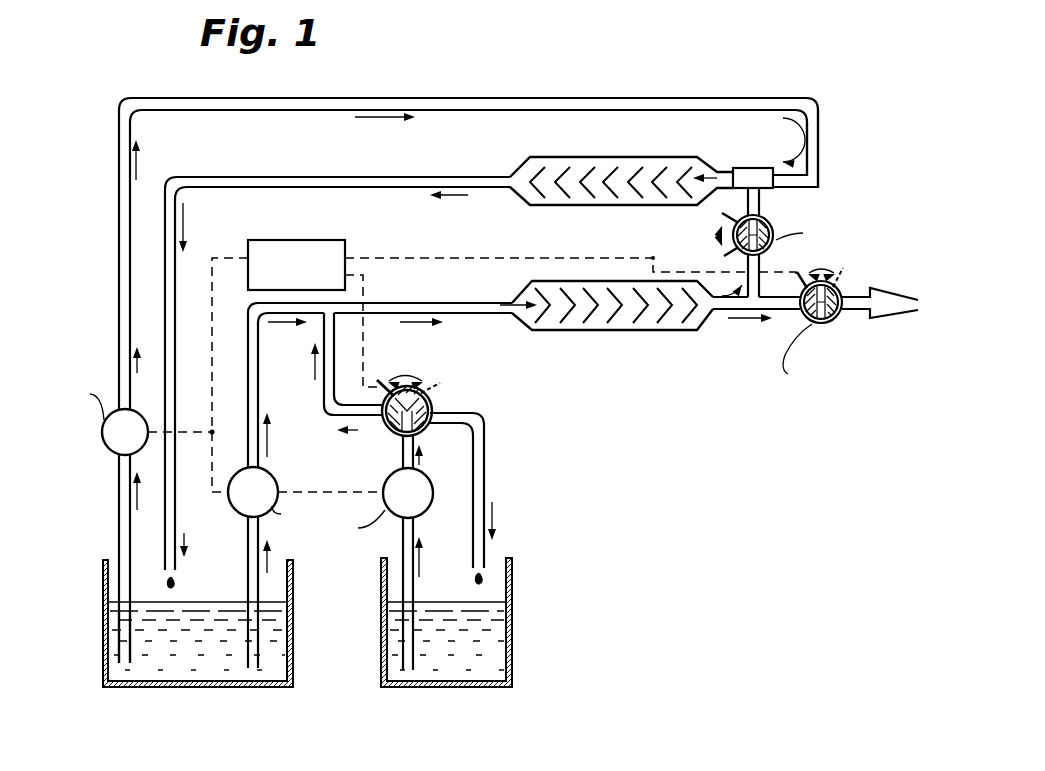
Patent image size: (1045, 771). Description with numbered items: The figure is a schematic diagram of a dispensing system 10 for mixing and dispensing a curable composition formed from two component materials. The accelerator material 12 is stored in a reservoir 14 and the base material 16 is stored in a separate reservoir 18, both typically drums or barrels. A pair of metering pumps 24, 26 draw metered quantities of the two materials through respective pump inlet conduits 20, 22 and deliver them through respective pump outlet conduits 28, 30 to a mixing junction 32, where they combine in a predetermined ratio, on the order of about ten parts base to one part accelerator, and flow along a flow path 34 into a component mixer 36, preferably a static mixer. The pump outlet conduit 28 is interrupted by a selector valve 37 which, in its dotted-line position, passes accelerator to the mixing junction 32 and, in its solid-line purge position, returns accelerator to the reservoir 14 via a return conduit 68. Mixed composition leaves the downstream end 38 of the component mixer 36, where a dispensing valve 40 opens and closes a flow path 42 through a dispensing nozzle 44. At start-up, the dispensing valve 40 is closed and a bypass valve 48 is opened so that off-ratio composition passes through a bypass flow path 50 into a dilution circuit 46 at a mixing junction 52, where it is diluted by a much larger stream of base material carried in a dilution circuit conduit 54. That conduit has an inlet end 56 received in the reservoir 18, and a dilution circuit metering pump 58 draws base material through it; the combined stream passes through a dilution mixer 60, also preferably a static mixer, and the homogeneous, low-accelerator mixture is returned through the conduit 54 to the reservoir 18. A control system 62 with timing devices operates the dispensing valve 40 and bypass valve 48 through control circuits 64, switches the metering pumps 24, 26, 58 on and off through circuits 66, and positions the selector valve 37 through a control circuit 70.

The dispensing system 10 is at (600, 465).
The accelerator material 12 is at (490, 660).
The reservoir 14 is at (512, 583).
The base material 16 is at (280, 665).
The reservoir 18 is at (103, 642).
The pump inlet conduit 20 is at (415, 600).
The pump inlet conduit 22 is at (259, 592).
The metering pump 24 is at (430, 505).
The metering pump 26 is at (240, 512).
The pump outlet conduit 28 is at (325, 418).
The pump outlet conduit 30 is at (258, 372).
The mixing junction 32 is at (351, 296).
The flow path 34 is at (440, 302).
The component mixer 36 is at (548, 330).
The selector valve 37 is at (432, 405).
The downstream end 38 is at (714, 310).
The dispensing valve 40 is at (822, 324).
The flow path 42 is at (782, 310).
The dispensing nozzle 44 is at (880, 290).
The dilution circuit 46 is at (822, 134).
The bypass valve 48 is at (768, 250).
The bypass flow path 50 is at (762, 210).
The mixing junction 52 is at (738, 168).
The dilution circuit conduit 54 is at (692, 98).
The inlet end 56 is at (131, 660).
The dilution circuit metering pump 58 is at (115, 455).
The dilution mixer 60 is at (568, 157).
The control system 62 is at (350, 248).
The control circuits 64 is at (552, 257).
The circuits 66 is at (210, 385).
The return conduit 68 is at (486, 480).
The control circuit 70 is at (365, 340).